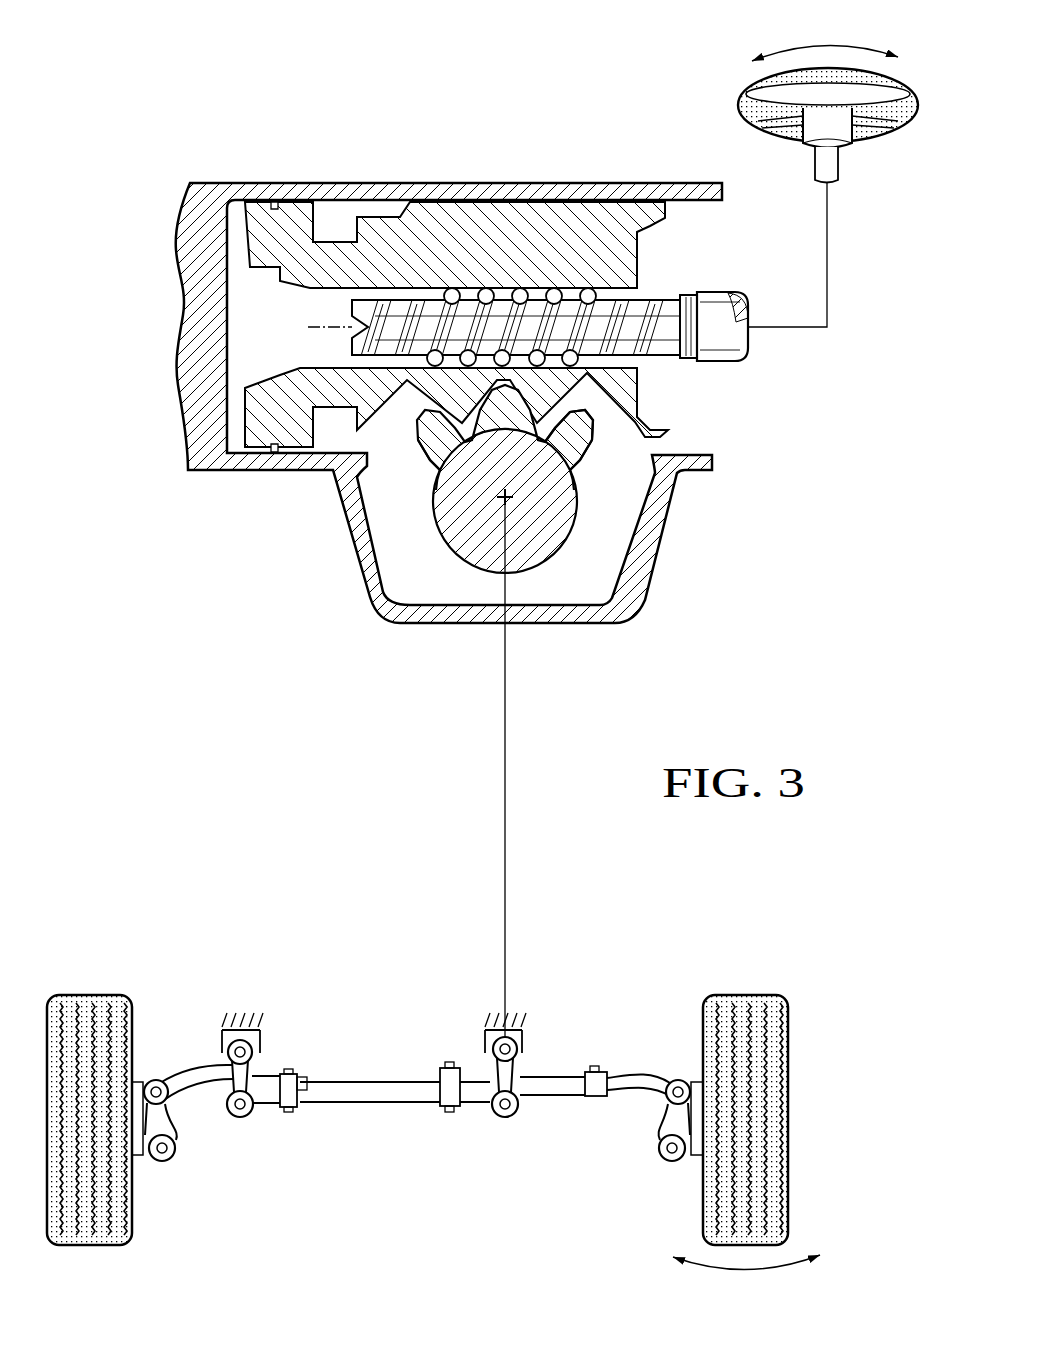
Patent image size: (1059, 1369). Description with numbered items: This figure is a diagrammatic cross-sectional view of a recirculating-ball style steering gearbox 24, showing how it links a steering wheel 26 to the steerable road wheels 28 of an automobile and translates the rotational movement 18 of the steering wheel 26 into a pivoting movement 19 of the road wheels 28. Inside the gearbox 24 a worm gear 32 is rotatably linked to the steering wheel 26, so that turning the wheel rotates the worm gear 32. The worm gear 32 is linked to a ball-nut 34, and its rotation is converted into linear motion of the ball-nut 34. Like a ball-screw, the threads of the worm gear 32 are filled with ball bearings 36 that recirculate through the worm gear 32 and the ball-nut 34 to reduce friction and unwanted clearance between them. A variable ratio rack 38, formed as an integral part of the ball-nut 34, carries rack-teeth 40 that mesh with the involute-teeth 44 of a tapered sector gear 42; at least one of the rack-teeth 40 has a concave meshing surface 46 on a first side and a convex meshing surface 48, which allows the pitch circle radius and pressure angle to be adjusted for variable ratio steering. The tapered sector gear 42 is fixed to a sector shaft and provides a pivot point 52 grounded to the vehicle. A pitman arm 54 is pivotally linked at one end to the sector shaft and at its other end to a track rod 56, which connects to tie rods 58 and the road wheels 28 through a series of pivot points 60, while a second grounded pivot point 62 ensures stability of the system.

The rotational movement 18 is at (827, 47).
The pivoting movement 19 is at (750, 1270).
The recirculating-ball style steering gearbox 24 is at (207, 178).
The steering wheel 26 is at (738, 108).
The steerable road wheels 28 is at (133, 1195).
The worm gear 32 is at (642, 297).
The ball-nut 34 is at (674, 224).
The ball bearings 36 is at (455, 288).
The variable ratio rack 38 is at (645, 416).
The rack-teeth 40 is at (427, 413).
The tapered sector gear 42 is at (460, 567).
The involute-teeth 44 is at (430, 463).
The concave meshing surface 46 is at (588, 425).
The convex meshing surface 48 is at (567, 467).
The pivot point 52 is at (518, 1045).
The pitman arm 54 is at (515, 1072).
The track rod 56 is at (362, 1104).
The tie rods 58 is at (196, 1082).
The pivot points 60 is at (159, 1082).
The second grounded pivot point 62 is at (252, 1050).